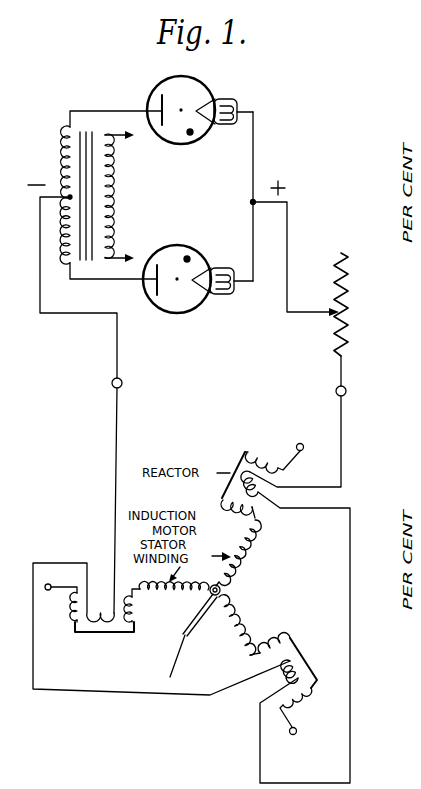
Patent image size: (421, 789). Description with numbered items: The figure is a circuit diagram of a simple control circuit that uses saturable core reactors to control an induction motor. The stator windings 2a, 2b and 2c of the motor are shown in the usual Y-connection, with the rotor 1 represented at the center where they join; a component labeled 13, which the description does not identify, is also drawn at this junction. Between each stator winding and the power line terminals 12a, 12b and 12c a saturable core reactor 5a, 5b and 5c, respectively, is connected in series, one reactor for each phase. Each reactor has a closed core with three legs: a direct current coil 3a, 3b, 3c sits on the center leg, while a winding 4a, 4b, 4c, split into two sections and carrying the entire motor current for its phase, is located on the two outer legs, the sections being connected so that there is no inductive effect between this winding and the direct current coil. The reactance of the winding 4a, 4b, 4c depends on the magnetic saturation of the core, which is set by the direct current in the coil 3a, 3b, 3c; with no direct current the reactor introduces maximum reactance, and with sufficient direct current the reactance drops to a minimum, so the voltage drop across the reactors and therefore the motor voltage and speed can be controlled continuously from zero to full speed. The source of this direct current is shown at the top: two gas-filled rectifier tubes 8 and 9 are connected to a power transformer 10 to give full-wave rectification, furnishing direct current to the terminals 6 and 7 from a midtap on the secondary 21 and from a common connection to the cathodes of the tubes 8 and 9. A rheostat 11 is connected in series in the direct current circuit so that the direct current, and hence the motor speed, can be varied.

The rotor 1 is at (222, 590).
The stator winding 2a is at (250, 560).
The stator winding 2b is at (235, 633).
The stator winding 2c is at (156, 596).
The direct current coil 3a is at (261, 492).
The direct current coil 3b is at (264, 690).
The direct current coil 3c is at (161, 629).
The winding 4a is at (282, 452).
The winding 4b is at (280, 640).
The winding 4c is at (67, 605).
The saturable core reactor 5a is at (216, 490).
The saturable core reactor 5b is at (311, 645).
The saturable core reactor 5c is at (106, 641).
The terminal 6 is at (112, 385).
The terminal 7 is at (335, 392).
The gas-filled rectifier tube 8 is at (187, 250).
The gas-filled rectifier tube 9 is at (191, 138).
The power transformer 10 is at (88, 122).
The rheostat 11 is at (351, 306).
The power line terminal 12a is at (311, 463).
The power line terminal 12b is at (289, 733).
The power line terminal 12c is at (61, 580).
The switch 13 is at (192, 640).
The secondary 21 is at (61, 151).